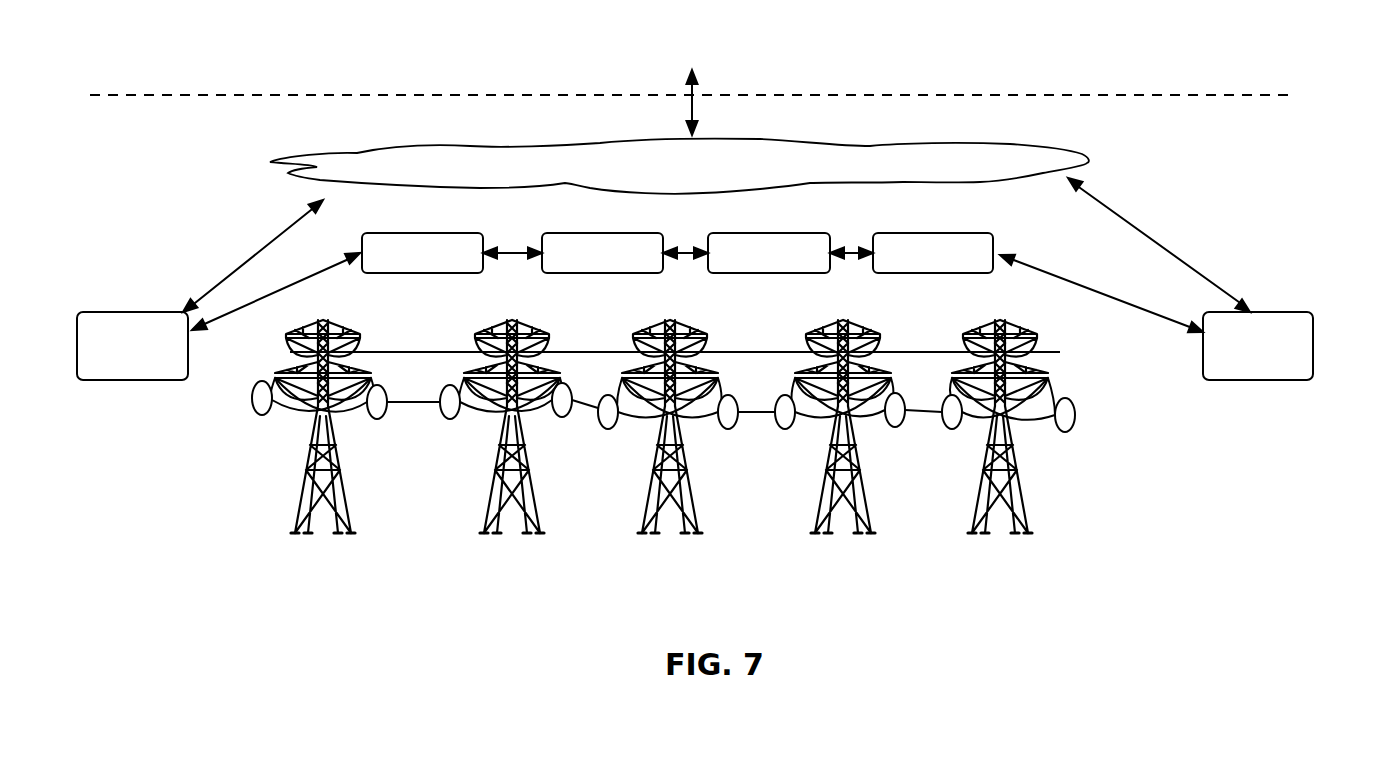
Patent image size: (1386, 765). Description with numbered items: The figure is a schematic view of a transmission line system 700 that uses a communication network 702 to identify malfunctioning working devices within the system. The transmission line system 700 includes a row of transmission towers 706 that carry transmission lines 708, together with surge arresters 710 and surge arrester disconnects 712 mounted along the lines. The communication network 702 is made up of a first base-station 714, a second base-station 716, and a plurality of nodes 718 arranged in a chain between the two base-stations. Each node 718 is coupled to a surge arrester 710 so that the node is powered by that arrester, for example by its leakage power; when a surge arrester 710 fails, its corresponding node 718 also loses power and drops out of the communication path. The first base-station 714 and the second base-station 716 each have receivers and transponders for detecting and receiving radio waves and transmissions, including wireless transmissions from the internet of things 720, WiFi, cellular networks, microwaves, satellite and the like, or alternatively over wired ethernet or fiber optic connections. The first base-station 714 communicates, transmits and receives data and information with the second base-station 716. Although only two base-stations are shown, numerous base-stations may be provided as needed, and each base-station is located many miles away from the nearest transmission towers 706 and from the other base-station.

The transmission line system 700 is at (212, 500).
The communication network 702 is at (1203, 244).
The transmission towers 706 is at (345, 497).
The transmission lines 708 is at (353, 352).
The surge arresters 710 is at (373, 385).
The surge arrester disconnects 712 is at (377, 419).
The first base-station 714 is at (118, 312).
The second base-station 716 is at (1283, 312).
The nodes 718 is at (433, 233).
The internet of things 720 is at (870, 158).